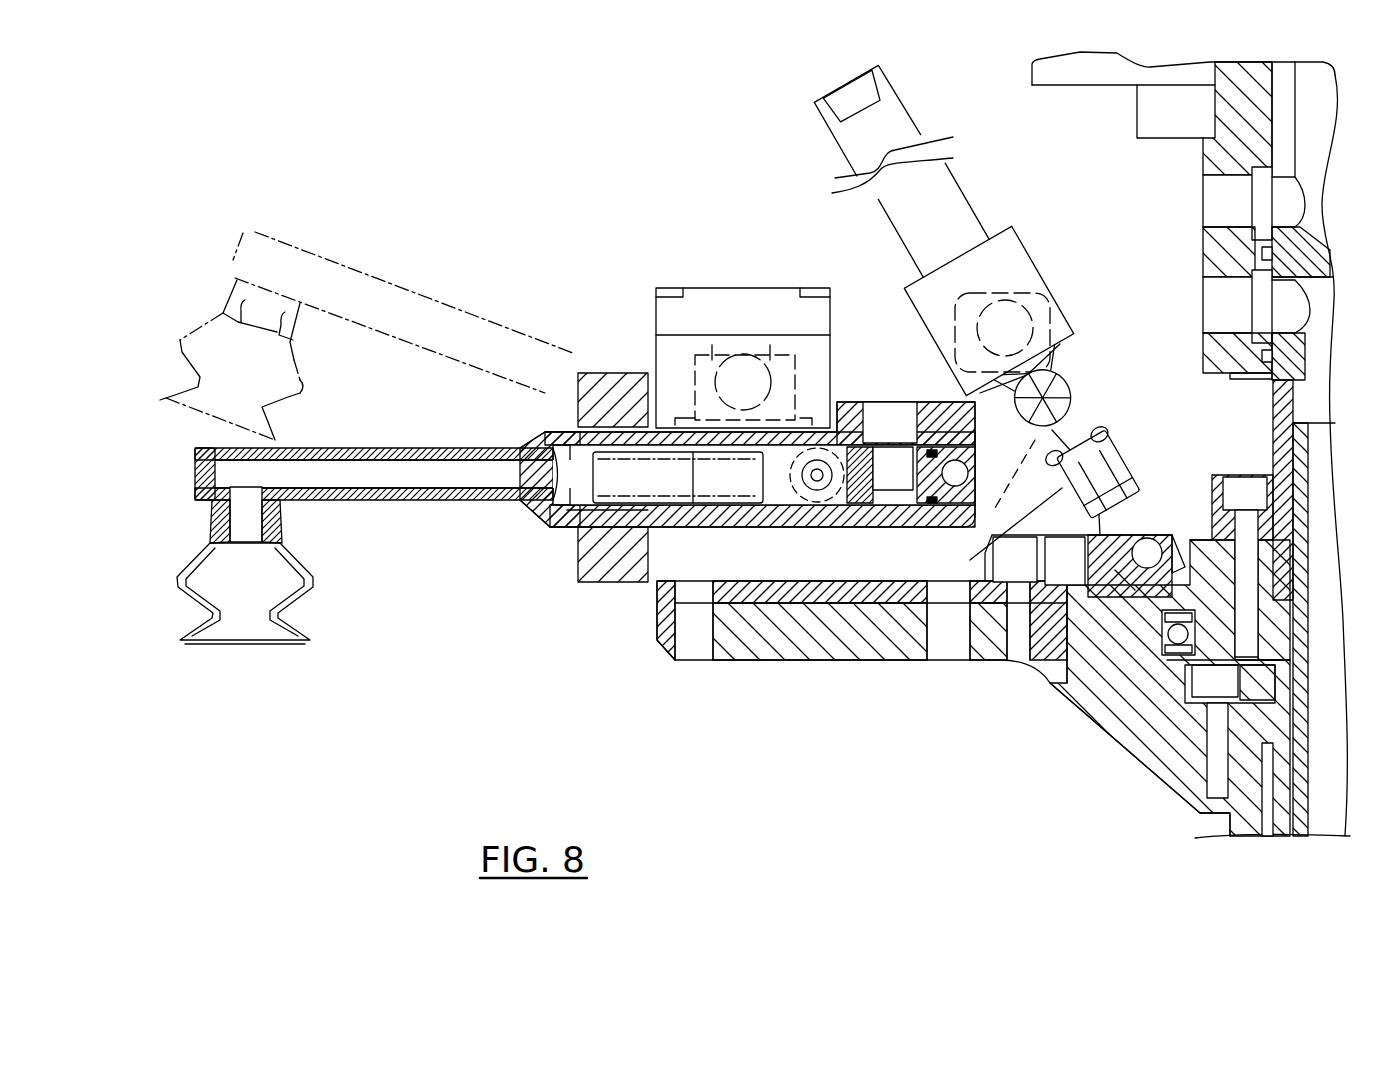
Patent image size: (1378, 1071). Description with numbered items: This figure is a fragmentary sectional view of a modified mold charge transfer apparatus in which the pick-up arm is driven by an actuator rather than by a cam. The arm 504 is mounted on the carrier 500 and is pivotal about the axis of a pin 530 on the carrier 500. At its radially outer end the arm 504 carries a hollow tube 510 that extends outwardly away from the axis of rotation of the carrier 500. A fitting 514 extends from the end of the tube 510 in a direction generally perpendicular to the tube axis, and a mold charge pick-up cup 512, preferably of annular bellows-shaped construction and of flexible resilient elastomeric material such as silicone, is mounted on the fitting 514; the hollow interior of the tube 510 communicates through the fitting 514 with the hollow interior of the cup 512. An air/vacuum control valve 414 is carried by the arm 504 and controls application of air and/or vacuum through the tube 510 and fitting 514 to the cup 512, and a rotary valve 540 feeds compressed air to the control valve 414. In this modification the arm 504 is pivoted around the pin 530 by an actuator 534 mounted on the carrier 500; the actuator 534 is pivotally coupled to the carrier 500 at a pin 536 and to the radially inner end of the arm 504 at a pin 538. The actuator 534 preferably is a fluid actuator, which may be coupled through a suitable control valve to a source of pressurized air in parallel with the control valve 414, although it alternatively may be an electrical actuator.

The air/vacuum control valve 414 is at (736, 280).
The carrier 500 is at (865, 662).
The arm 504 is at (725, 532).
The hollow tube 510 is at (430, 497).
The mold charge pick-up cup 512 is at (187, 597).
The fitting 514 is at (222, 523).
The pin 530 is at (803, 503).
The actuator 534 is at (962, 213).
The pin 536 is at (1147, 550).
The pin 538 is at (1060, 372).
The rotary valve 540 is at (1196, 161).